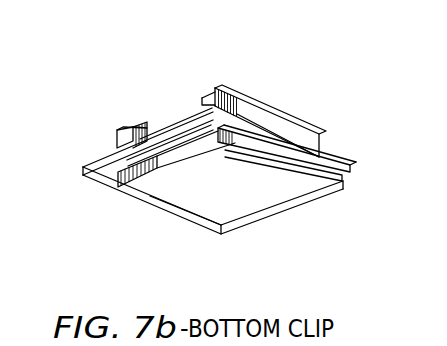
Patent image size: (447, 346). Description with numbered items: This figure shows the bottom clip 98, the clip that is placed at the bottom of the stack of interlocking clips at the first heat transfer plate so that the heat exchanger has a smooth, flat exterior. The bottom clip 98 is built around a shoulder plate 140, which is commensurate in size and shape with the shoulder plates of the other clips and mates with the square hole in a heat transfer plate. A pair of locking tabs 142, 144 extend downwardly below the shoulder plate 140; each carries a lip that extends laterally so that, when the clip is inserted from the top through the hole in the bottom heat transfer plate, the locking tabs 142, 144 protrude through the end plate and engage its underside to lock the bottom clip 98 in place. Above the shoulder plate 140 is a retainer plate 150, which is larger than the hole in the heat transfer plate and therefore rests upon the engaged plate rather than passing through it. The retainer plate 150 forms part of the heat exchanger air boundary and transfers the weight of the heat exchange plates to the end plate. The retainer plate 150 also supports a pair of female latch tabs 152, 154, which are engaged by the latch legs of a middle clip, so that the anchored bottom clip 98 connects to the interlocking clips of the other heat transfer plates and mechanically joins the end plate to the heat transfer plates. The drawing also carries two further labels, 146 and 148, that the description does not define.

The shoulder plate 140 is at (250, 192).
The locking tab 142 is at (302, 178).
The locking tab 144 is at (183, 207).
The inner rail 146 is at (288, 158).
The left rail 148 is at (116, 186).
The retainer plate 150 is at (95, 150).
The female latch tab 152 is at (262, 103).
The female latch tab 154 is at (126, 127).
The bottom clip 98 is at (208, 281).